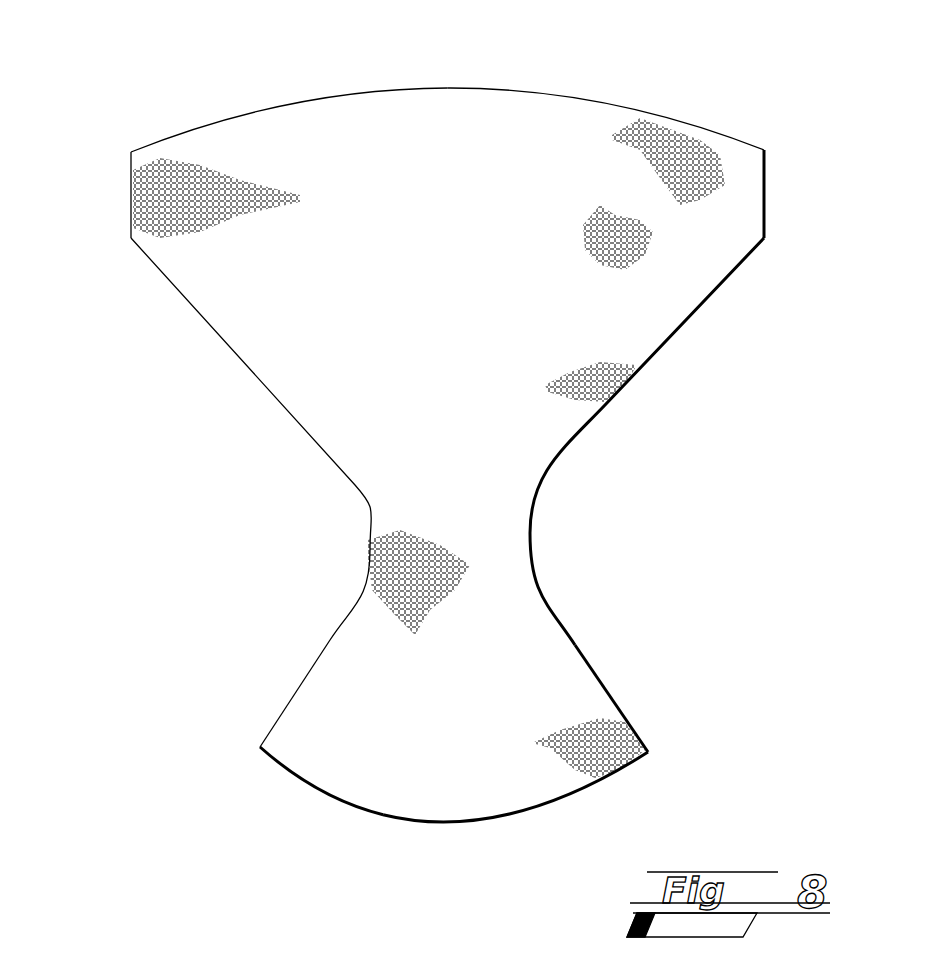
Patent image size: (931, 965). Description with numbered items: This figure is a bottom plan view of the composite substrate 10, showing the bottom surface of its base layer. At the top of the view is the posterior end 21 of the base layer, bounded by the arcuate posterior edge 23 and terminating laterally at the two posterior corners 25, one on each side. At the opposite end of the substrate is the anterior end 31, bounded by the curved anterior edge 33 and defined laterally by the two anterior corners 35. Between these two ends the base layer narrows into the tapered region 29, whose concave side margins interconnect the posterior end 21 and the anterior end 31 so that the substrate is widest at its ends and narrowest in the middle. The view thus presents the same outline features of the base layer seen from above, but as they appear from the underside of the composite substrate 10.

The composite substrate 10 is at (715, 541).
The posterior end 21 is at (677, 105).
The posterior edge 23 is at (312, 100).
The posterior corners 25 is at (118, 200).
The tapered region 29 is at (346, 497).
The anterior end 31 is at (306, 835).
The anterior edge 33 is at (413, 820).
The anterior corners 35 is at (246, 748).